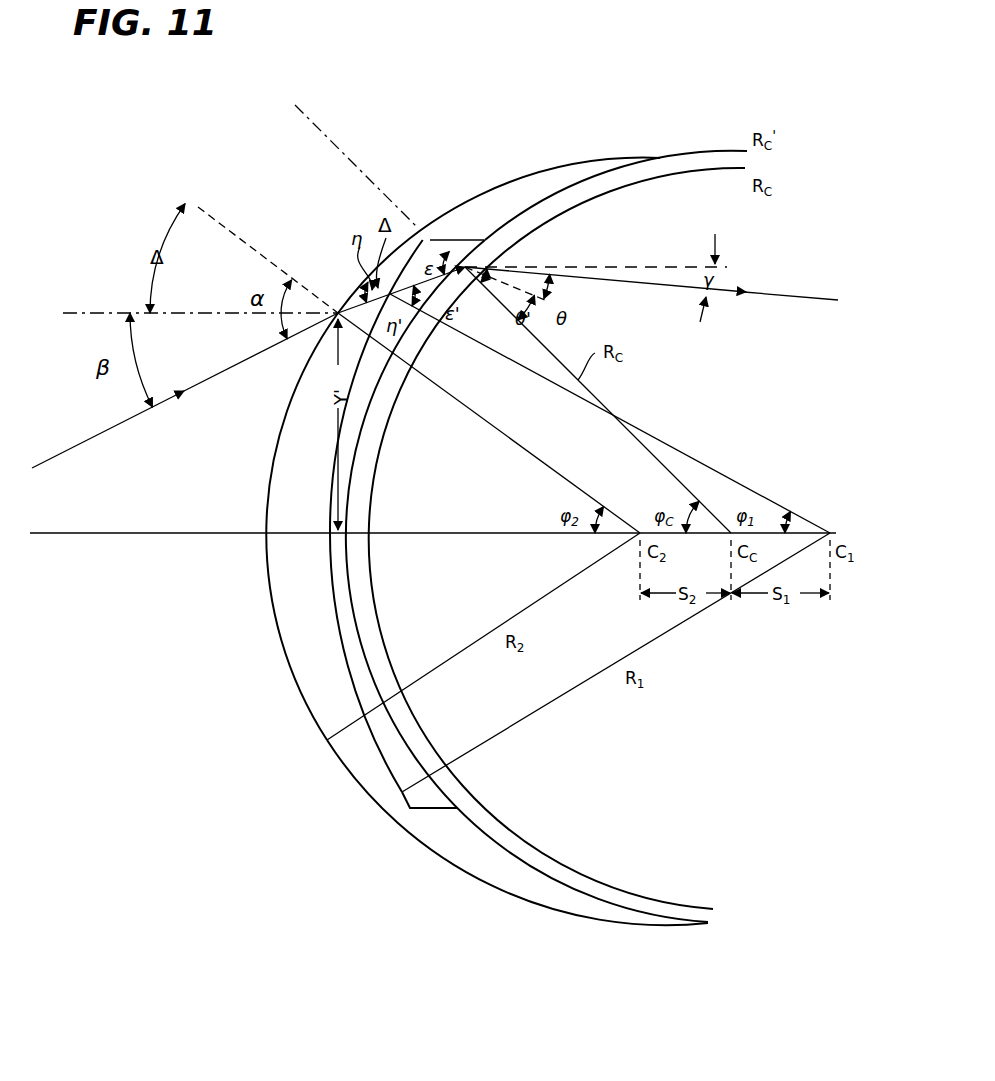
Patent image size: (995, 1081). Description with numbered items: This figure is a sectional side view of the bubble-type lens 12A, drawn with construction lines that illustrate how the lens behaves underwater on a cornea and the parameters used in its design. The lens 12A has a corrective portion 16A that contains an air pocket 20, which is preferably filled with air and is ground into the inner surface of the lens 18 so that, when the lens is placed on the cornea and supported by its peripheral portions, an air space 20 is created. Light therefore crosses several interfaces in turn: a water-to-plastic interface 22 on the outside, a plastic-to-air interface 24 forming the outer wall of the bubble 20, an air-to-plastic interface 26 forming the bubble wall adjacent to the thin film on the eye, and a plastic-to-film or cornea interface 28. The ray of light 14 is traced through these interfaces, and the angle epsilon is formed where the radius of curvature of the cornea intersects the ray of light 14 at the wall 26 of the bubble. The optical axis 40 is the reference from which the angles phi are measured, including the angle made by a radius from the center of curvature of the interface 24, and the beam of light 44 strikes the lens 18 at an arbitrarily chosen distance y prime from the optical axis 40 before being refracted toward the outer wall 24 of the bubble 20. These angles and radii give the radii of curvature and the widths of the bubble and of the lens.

The lens 12A is at (458, 99).
The ray of light 14 is at (238, 363).
The corrective portion 16A is at (492, 184).
The lens 18 is at (553, 178).
The air pocket 20 is at (360, 675).
The water-to-plastic interface 22 is at (266, 496).
The plastic-to-air interface 24 is at (340, 446).
The air-to-plastic interface 26 is at (350, 488).
The plastic-to-film or cornea interface 28 is at (360, 517).
The optical axis 40 is at (490, 537).
The beam of light 44 is at (786, 294).